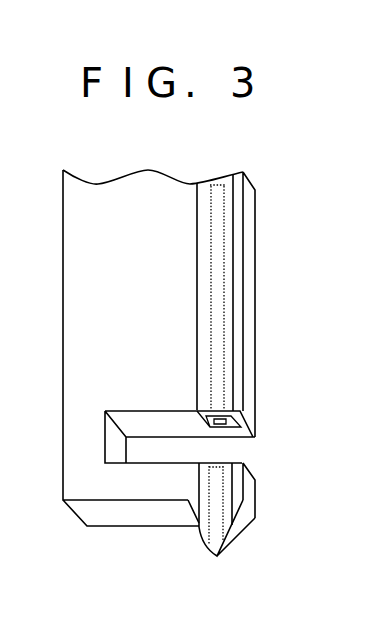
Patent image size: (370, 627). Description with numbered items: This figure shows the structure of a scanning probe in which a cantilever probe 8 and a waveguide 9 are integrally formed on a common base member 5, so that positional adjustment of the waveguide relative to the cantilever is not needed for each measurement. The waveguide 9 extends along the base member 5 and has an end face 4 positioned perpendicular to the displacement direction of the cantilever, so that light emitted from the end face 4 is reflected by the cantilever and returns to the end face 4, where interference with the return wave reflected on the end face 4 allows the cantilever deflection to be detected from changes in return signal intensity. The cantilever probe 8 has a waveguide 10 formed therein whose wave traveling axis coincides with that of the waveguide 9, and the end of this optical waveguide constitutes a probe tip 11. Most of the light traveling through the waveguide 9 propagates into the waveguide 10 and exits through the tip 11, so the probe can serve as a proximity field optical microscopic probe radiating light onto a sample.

The base member 5 is at (97, 298).
The waveguide 9 is at (217, 222).
The cantilever probe 8 is at (150, 489).
The waveguide end face 4 is at (226, 427).
The waveguide 10 is at (214, 492).
The probe tip 11 is at (217, 556).